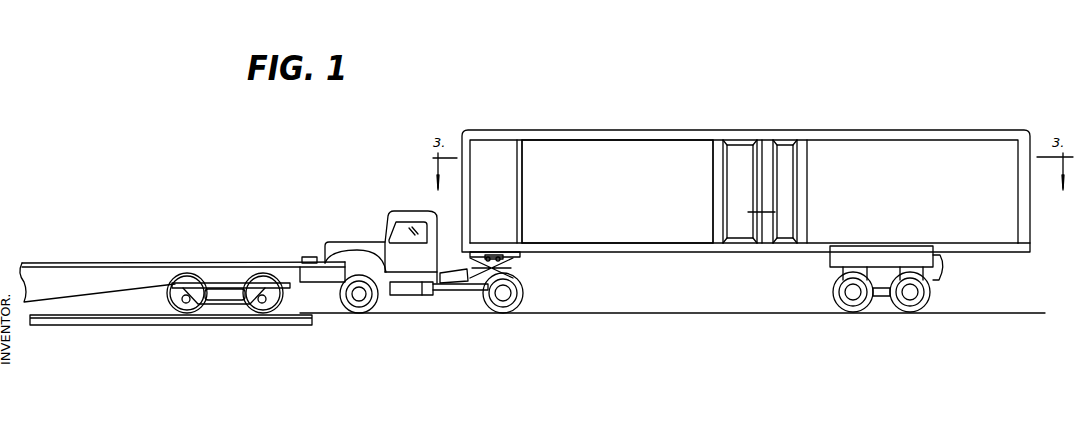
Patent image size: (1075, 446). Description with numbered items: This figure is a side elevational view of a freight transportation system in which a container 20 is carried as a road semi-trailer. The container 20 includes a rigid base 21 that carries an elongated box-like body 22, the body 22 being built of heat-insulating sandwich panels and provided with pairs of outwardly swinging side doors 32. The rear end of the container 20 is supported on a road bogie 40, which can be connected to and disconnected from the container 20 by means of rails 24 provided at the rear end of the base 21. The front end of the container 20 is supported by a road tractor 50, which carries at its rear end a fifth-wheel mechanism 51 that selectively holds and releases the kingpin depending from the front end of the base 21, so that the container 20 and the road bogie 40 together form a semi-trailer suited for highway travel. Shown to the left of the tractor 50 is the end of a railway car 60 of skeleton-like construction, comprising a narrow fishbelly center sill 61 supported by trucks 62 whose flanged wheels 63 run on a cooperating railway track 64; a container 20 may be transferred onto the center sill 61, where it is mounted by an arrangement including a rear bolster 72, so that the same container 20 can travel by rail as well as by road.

The container 20 is at (710, 109).
The rigid base 21 is at (635, 252).
The body 22 is at (613, 195).
The rails 24 is at (985, 253).
The side doors 32 is at (732, 175).
The road bogie 40 is at (830, 258).
The road tractor 50 is at (383, 214).
The fifth-wheel mechanism 51 is at (520, 262).
The railway car 60 is at (117, 263).
The center sill 61 is at (67, 292).
The trucks 62 is at (227, 305).
The flanged wheels 63 is at (287, 297).
The railway track 64 is at (112, 326).
The rear bolster 72 is at (305, 257).